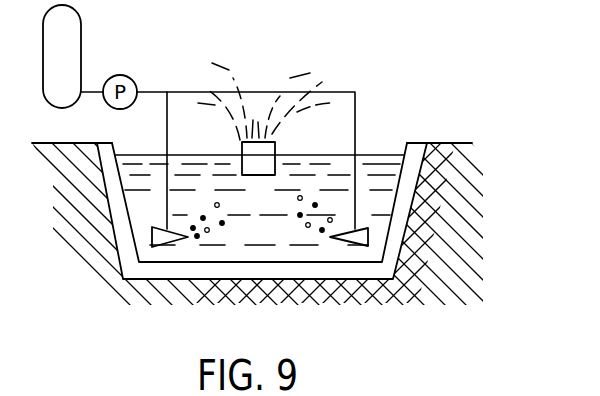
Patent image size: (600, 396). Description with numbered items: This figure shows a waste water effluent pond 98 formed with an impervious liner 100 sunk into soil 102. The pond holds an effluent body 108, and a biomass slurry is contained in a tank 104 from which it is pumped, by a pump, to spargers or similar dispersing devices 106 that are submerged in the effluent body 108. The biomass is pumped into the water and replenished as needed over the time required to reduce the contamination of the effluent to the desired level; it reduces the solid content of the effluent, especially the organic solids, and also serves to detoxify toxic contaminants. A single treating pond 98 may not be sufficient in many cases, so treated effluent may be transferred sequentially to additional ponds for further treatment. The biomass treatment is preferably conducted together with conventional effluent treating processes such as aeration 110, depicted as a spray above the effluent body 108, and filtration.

The waste water effluent pond 98 is at (398, 258).
The impervious liner 100 is at (412, 152).
The soil 102 is at (438, 141).
The tank 104 is at (80, 42).
The spargers or dispersing devices 106 is at (167, 247).
The effluent body 108 is at (140, 163).
The aeration 110 is at (230, 68).